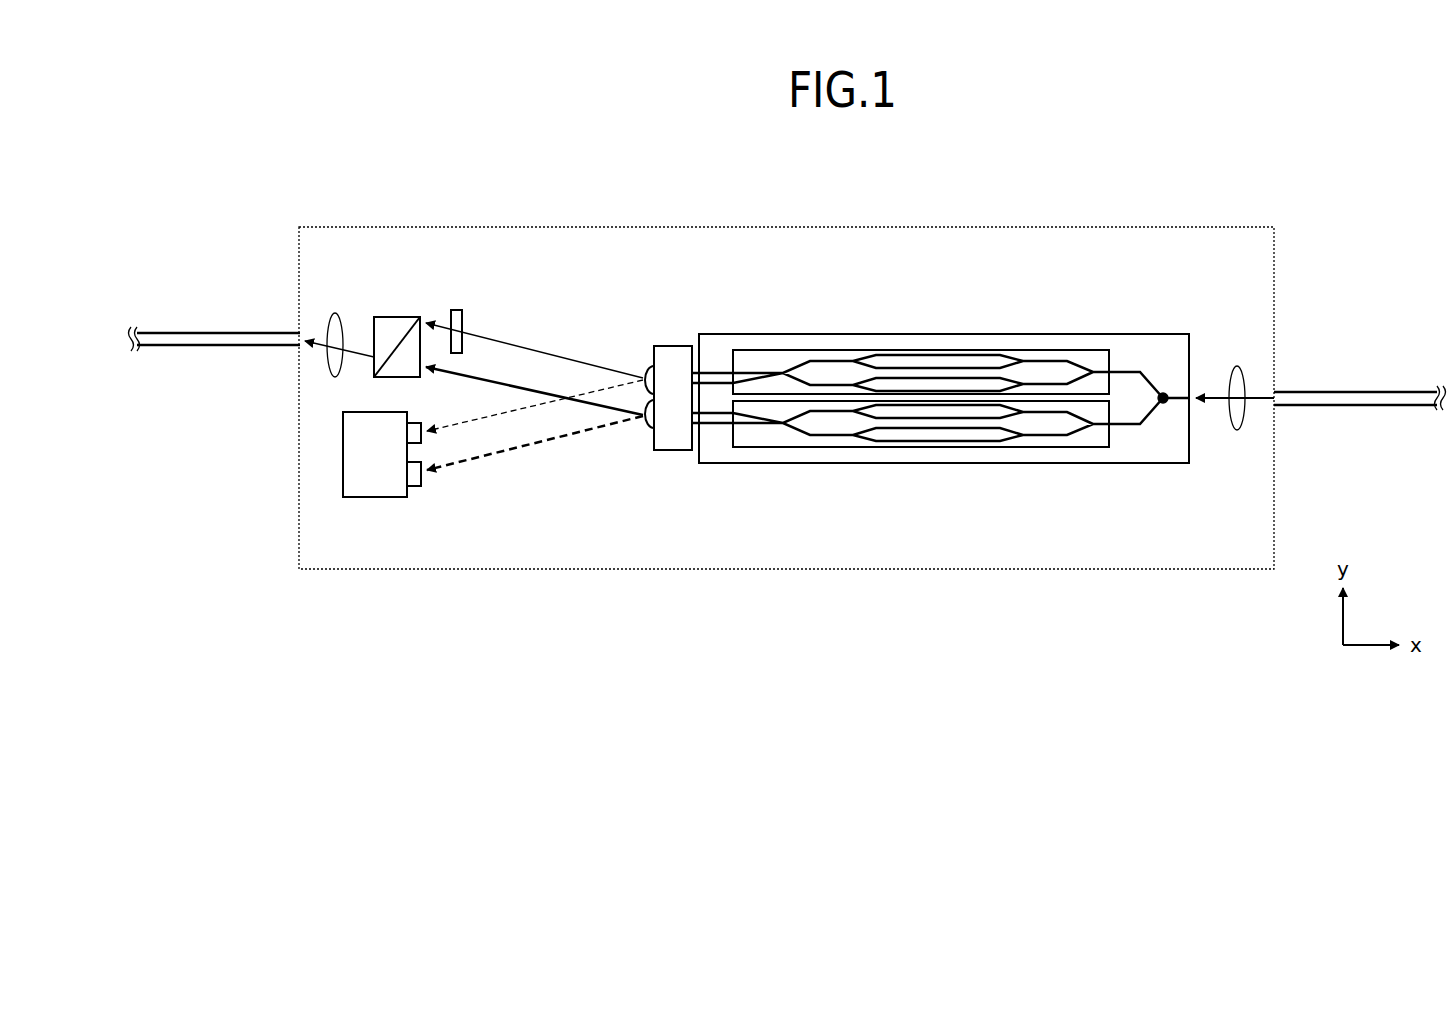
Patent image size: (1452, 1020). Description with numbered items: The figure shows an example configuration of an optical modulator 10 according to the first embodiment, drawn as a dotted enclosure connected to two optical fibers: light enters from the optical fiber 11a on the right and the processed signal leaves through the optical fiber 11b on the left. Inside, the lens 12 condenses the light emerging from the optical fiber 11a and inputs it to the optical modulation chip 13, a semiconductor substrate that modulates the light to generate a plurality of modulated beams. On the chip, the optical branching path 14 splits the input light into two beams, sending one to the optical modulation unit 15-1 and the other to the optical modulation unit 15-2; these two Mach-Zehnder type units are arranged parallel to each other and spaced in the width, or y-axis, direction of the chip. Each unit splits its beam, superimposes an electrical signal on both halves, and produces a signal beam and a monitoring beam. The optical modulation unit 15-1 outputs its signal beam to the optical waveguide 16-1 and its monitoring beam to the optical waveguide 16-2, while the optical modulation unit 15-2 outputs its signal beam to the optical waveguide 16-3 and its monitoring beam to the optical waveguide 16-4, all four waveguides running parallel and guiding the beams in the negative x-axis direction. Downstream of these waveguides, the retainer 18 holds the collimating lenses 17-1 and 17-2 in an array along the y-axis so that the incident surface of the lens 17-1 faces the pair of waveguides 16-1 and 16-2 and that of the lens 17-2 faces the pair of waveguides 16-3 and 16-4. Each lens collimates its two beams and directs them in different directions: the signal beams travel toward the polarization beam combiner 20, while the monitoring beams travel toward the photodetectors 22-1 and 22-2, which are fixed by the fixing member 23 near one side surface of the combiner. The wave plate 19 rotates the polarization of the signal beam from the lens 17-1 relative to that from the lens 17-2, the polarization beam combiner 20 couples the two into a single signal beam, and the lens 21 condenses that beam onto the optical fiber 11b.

The optical modulator 10 is at (1172, 227).
The optical fiber 11a is at (1345, 392).
The optical fiber 11b is at (213, 332).
The lens 12 is at (1237, 366).
The optical modulation chip 13 is at (1172, 334).
The optical branching path 14 is at (1163, 404).
The optical modulation unit 15-1 is at (1035, 350).
The optical modulation unit 15-2 is at (1035, 447).
The optical waveguide 16-1 is at (718, 383).
The optical waveguide 16-2 is at (707, 373).
The optical waveguide 16-3 is at (710, 413).
The optical waveguide 16-4 is at (722, 423).
The lens 17-1 is at (645, 366).
The lens 17-2 is at (645, 429).
The retainer 18 is at (672, 450).
The wave plate 19 is at (457, 310).
The polarization beam combiner 20 is at (400, 317).
The lens 21 is at (335, 313).
The photodetector 22-1 is at (445, 405).
The photodetector 22-2 is at (421, 487).
The fixing member 23 is at (370, 497).